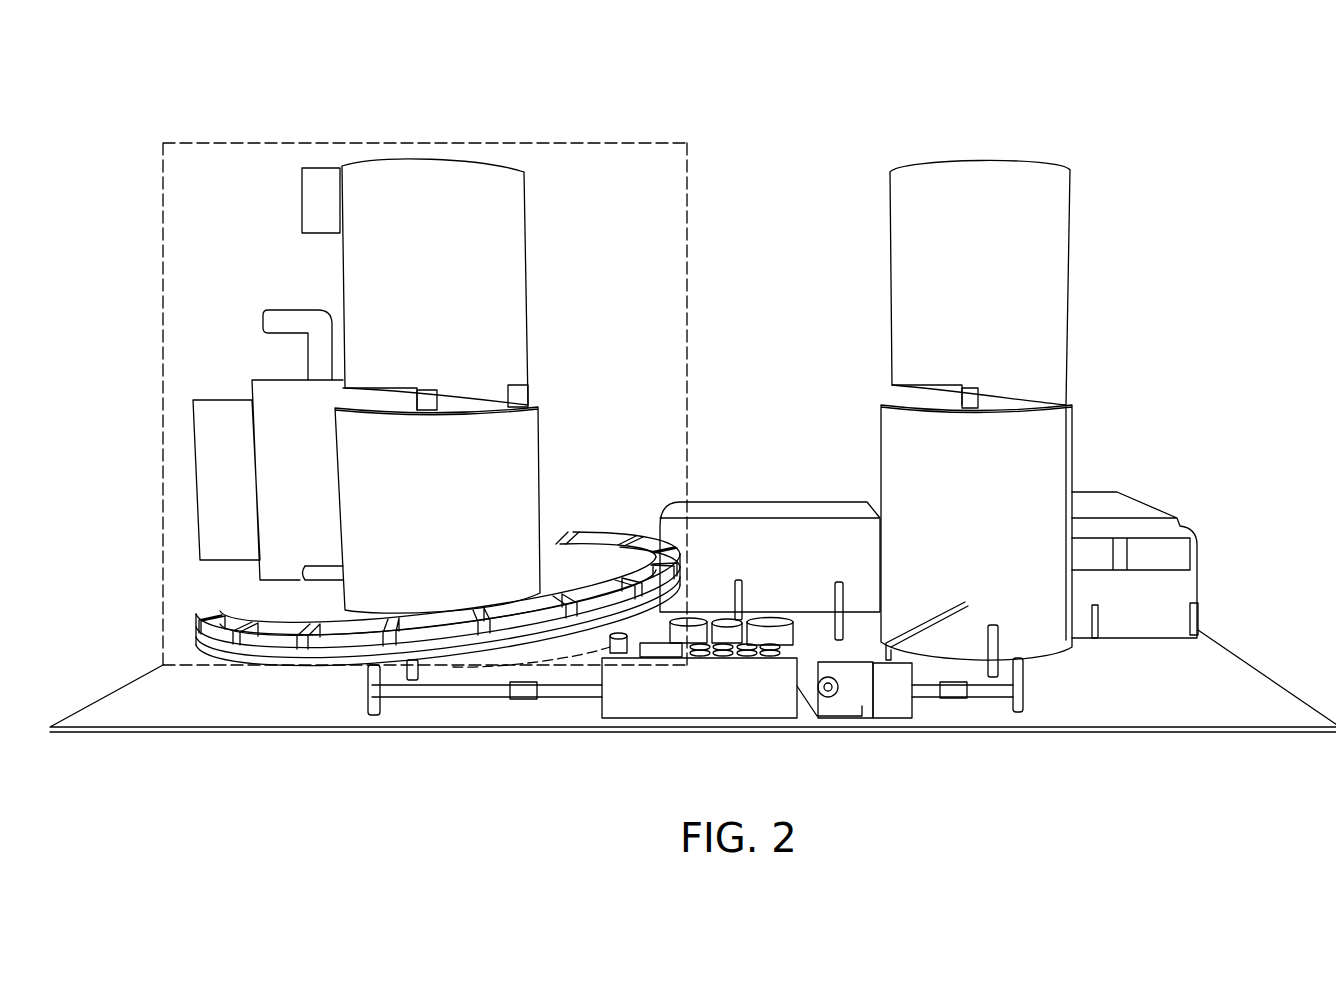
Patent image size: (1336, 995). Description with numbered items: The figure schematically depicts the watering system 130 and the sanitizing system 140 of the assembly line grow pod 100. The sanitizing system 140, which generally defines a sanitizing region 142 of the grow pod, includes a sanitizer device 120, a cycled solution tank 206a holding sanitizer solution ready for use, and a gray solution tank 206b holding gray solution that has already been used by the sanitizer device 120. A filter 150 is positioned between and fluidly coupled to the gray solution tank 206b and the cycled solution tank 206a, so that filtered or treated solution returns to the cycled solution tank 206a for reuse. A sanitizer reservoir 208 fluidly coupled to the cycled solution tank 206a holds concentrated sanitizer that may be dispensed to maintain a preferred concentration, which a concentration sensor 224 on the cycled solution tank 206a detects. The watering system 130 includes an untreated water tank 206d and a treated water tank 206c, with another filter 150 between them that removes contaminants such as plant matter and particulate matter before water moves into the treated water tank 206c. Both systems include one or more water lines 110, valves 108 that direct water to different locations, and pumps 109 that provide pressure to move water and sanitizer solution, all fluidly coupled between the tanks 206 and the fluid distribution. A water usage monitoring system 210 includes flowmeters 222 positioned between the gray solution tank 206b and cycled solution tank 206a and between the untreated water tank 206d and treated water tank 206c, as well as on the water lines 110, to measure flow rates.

The assembly line grow pod 100 is at (693, 400).
The valve 108 is at (740, 727).
The pump 109 is at (876, 740).
The water line 110 is at (711, 729).
The sanitizer device 120 is at (770, 501).
The watering system 130 is at (1201, 362).
The sanitizing system 140 is at (444, 355).
The sanitizing region 142 is at (688, 244).
The filter 150 is at (378, 388).
The tank 206 is at (758, 360).
The cycled solution tank 206a is at (489, 282).
The gray solution tank 206b is at (493, 504).
The treated water tank 206c is at (1032, 282).
The untreated water tank 206d is at (1031, 520).
The sanitizer reservoir 208 is at (301, 205).
The water usage monitoring system 210 is at (438, 692).
The flowmeter 222 is at (434, 402).
The concentration sensor 224 is at (527, 390).